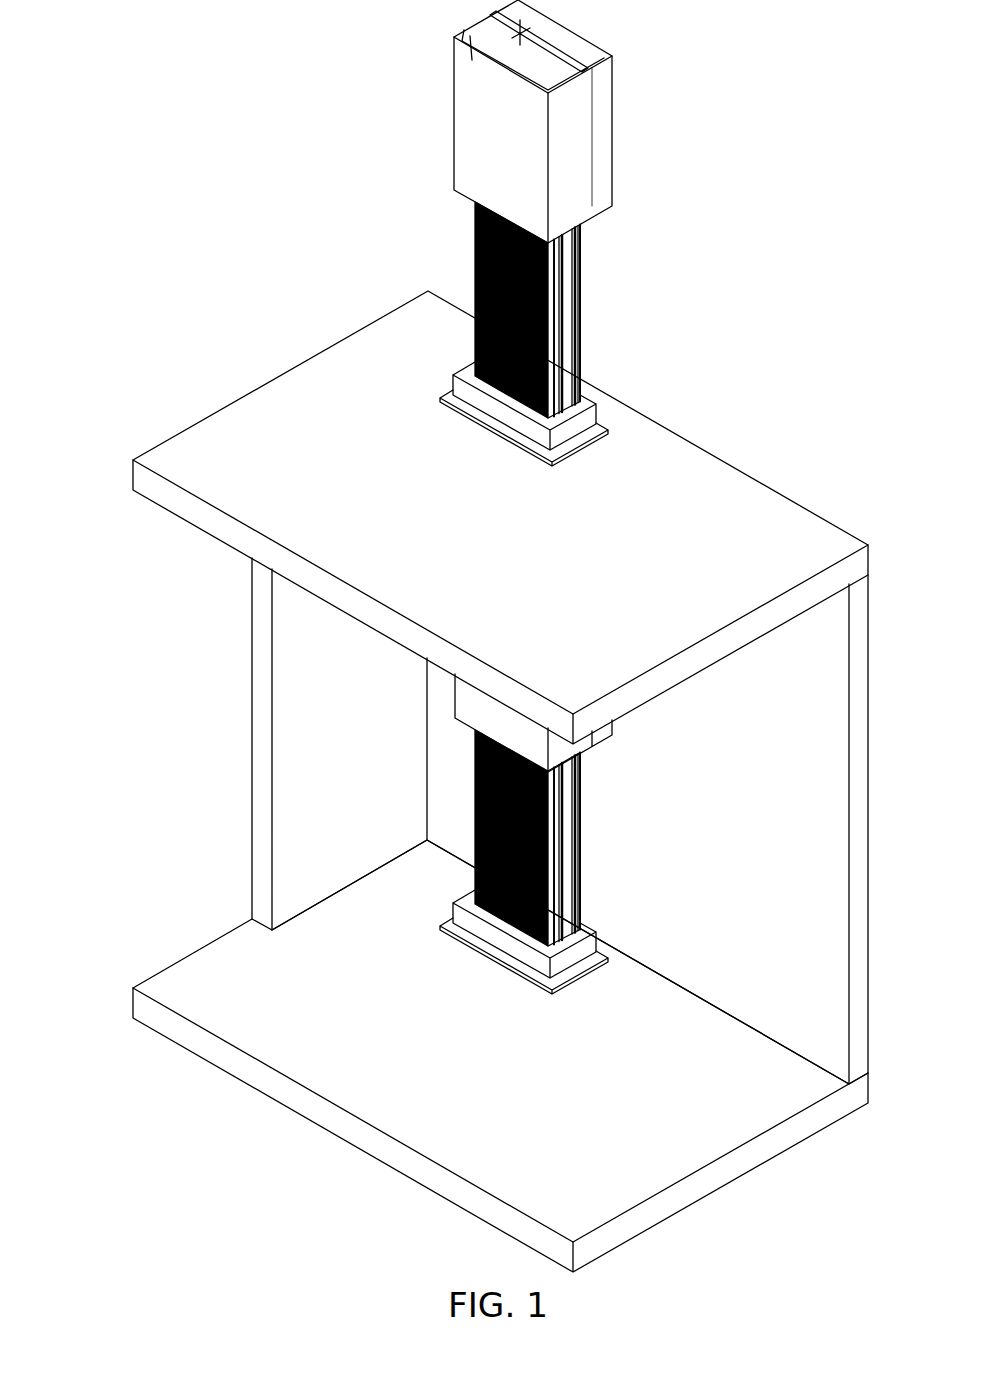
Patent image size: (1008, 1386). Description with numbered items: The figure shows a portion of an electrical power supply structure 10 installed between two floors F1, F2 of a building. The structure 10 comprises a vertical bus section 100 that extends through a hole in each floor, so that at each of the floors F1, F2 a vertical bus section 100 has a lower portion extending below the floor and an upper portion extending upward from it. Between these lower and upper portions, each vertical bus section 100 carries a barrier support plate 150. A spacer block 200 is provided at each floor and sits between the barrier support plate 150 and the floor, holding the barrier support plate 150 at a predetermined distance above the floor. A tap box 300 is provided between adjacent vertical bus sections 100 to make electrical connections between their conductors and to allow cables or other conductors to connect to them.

The electrical power supply structure 10 is at (268, 125).
The vertical bus section 100 is at (462, 256).
The barrier support plate 150 is at (583, 403).
The spacer block 200 is at (583, 422).
The tap box 300 is at (613, 170).
The floor F1 is at (133, 1008).
The floor F2 is at (133, 480).